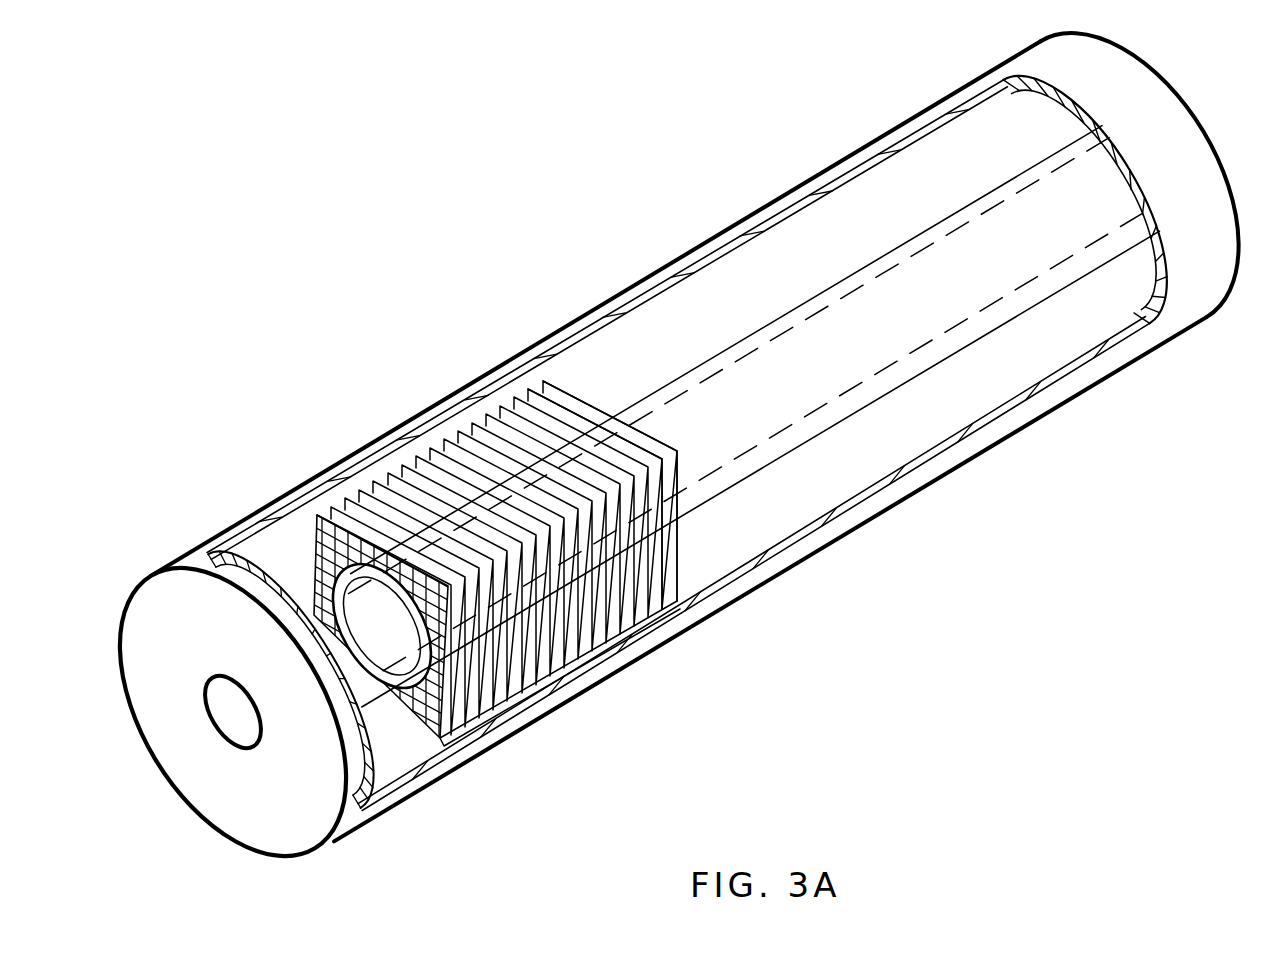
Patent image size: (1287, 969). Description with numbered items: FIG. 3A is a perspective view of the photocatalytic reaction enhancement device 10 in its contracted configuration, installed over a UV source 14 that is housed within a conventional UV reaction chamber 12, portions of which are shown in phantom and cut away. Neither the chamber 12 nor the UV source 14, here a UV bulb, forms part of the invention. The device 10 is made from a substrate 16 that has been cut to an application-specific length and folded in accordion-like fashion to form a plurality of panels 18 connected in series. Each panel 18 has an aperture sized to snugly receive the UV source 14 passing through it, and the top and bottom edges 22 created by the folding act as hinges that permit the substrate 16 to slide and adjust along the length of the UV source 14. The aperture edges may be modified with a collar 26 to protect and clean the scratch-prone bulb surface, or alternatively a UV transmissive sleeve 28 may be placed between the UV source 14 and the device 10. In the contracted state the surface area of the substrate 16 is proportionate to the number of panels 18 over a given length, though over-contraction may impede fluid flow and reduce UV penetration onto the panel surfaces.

The photocatalytic reaction enhancement device 10 is at (382, 722).
The UV reaction chamber 12 is at (308, 484).
The UV source 14 is at (922, 303).
The substrate 16 is at (550, 381).
The panel 18 is at (322, 541).
The top and bottom edges 22 is at (478, 422).
The collar 26 is at (442, 739).
The UV transmissive sleeve 28 is at (740, 350).